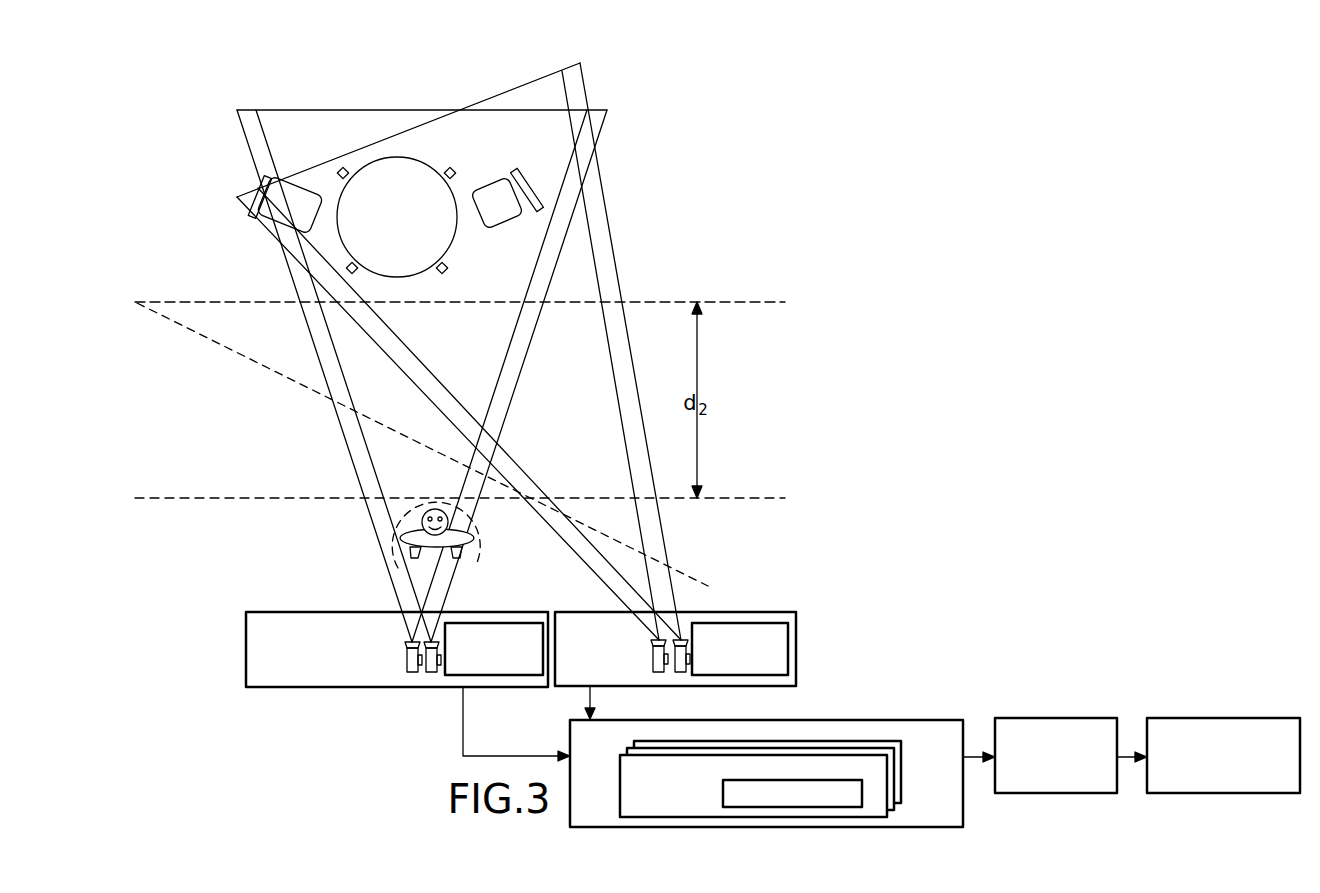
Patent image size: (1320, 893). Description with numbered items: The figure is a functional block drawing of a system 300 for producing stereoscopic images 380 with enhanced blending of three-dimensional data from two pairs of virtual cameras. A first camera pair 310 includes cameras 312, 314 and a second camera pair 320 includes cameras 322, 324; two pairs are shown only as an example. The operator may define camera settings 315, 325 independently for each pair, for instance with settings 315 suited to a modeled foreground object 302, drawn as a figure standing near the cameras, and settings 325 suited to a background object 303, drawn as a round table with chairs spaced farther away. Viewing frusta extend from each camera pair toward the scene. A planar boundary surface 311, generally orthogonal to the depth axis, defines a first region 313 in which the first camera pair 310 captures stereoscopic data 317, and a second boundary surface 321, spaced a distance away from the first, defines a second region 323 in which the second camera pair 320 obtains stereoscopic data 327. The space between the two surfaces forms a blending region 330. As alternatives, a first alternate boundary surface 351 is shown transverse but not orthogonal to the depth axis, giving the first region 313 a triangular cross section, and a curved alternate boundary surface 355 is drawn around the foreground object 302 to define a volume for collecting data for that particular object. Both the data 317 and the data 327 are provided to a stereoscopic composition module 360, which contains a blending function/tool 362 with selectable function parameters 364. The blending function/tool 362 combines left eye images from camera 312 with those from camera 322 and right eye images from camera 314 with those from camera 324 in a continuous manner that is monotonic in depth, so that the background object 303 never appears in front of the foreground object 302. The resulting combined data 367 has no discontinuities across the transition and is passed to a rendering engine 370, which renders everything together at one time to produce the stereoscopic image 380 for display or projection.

The system 300 is at (214, 156).
The foreground object 302 is at (473, 540).
The background object 303 is at (382, 228).
The first camera pair 310 is at (246, 656).
The boundary surface 311 is at (732, 496).
The camera 312 is at (410, 674).
The first region 313 is at (252, 571).
The camera 314 is at (431, 674).
The camera settings 315 is at (498, 676).
The 3D data 317 is at (462, 752).
The second camera pair 320 is at (797, 648).
The second boundary surface 321 is at (732, 299).
The camera 322 is at (657, 639).
The second region 323 is at (197, 295).
The camera 324 is at (683, 639).
The camera settings 325 is at (782, 623).
The 3D data 327 is at (589, 701).
The blending region 330 is at (252, 483).
The first alternate boundary surface 351 is at (713, 584).
The alternate boundary surface 355 is at (395, 521).
The stereoscopic composition module 360 is at (928, 719).
The blending function/tool 362 is at (620, 803).
The function parameters 364 is at (889, 800).
The combined 3D data 367 is at (975, 754).
The rendering engine 370 is at (1093, 718).
The stereoscopic image 380 is at (1200, 718).